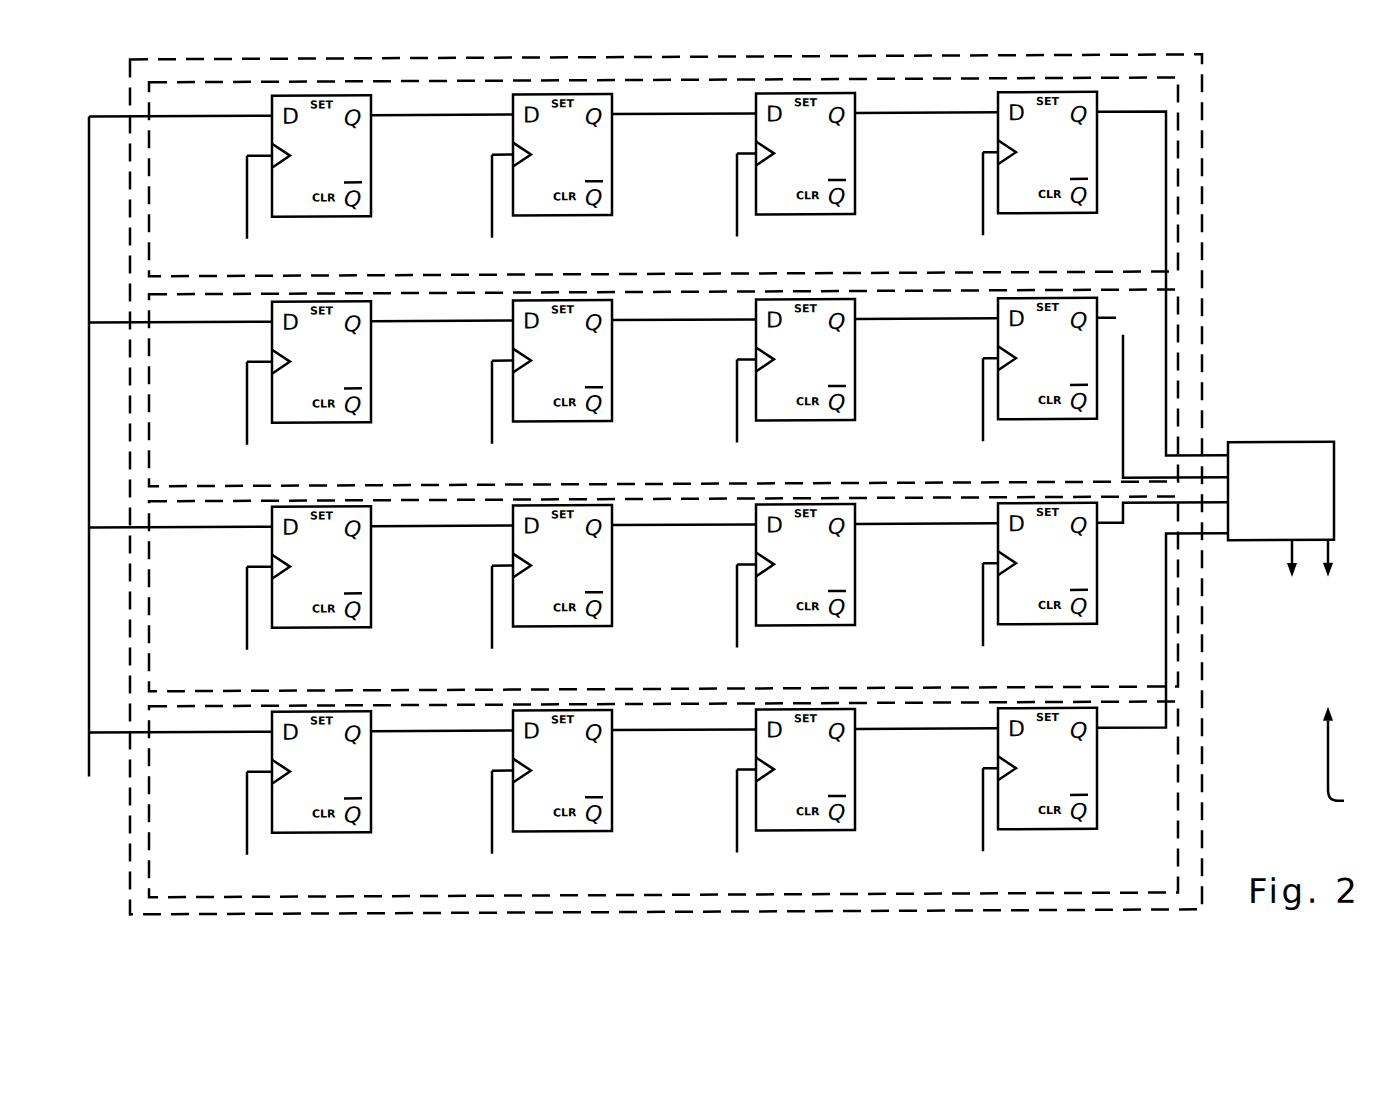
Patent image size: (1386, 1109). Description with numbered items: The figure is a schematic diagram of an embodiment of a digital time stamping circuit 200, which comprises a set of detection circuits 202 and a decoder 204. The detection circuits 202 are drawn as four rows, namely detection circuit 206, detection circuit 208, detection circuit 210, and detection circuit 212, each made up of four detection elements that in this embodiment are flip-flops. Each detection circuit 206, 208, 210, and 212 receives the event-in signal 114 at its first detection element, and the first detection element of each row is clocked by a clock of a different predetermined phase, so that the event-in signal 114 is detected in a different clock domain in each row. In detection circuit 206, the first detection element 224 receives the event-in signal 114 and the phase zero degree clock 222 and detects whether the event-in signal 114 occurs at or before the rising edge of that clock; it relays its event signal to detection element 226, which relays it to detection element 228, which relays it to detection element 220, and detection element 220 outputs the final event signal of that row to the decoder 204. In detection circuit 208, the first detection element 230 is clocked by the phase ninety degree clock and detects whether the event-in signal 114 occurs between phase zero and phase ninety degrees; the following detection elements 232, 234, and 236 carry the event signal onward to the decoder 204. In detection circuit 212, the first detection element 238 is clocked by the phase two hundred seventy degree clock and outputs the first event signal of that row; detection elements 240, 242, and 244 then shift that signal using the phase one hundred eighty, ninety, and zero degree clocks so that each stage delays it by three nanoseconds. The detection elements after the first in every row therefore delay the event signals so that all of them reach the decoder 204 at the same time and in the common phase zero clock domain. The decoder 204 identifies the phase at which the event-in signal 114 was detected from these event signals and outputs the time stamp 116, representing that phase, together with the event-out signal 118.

The time stamping circuit 200 is at (1301, 106).
The detection circuits 202 is at (1202, 78).
The decoder 204 is at (1280, 448).
The detection circuit 206 is at (1178, 154).
The detection circuit 208 is at (1178, 336).
The detection circuit 210 is at (1178, 654).
The detection circuit 212 is at (1178, 819).
The detection element 220 is at (1097, 157).
The phase 0 clock input 222 is at (1060, 252).
The first detection element 224 is at (371, 157).
The detection element 226 is at (612, 157).
The detection element 228 is at (855, 157).
The detection element 230 is at (371, 363).
The flip-flop B(1) 232 is at (612, 363).
The flip-flop B(2) 234 is at (855, 363).
The flip-flop B(3) 236 is at (1097, 364).
The first detection element 238 is at (371, 773).
The detection element 240 is at (612, 773).
The detection element 242 is at (855, 773).
The detection element 244 is at (1097, 834).
The event-in signal 114 is at (108, 838).
The time stamp 116 is at (1290, 756).
The event-out signal 118 is at (1349, 675).